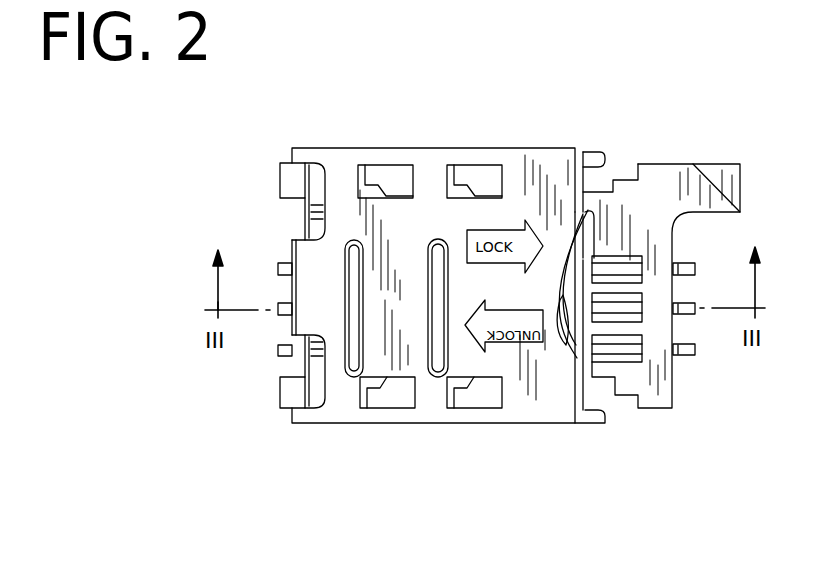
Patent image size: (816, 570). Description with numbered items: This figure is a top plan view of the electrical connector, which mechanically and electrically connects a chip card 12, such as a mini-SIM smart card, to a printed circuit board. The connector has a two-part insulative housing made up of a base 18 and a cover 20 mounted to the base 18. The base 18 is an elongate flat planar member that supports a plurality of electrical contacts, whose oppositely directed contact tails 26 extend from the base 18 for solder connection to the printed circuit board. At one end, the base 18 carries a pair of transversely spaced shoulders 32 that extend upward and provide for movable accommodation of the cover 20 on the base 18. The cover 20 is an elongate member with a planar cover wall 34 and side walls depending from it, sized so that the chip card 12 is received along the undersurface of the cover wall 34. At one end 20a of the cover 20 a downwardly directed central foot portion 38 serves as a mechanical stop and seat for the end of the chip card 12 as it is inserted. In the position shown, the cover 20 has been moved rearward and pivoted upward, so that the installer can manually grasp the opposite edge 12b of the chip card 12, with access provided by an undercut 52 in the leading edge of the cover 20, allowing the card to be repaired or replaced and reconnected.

The chip card 12 is at (580, 290).
The opposite edge of card 12b is at (587, 248).
The base 18 is at (672, 188).
The cover 20 is at (516, 405).
The end of cover 20a is at (327, 387).
The contact tails 26 is at (277, 268).
The shoulders 32 is at (297, 183).
The cover wall 34 is at (520, 175).
The central foot portion 38 is at (307, 313).
The undercut 52 is at (585, 290).